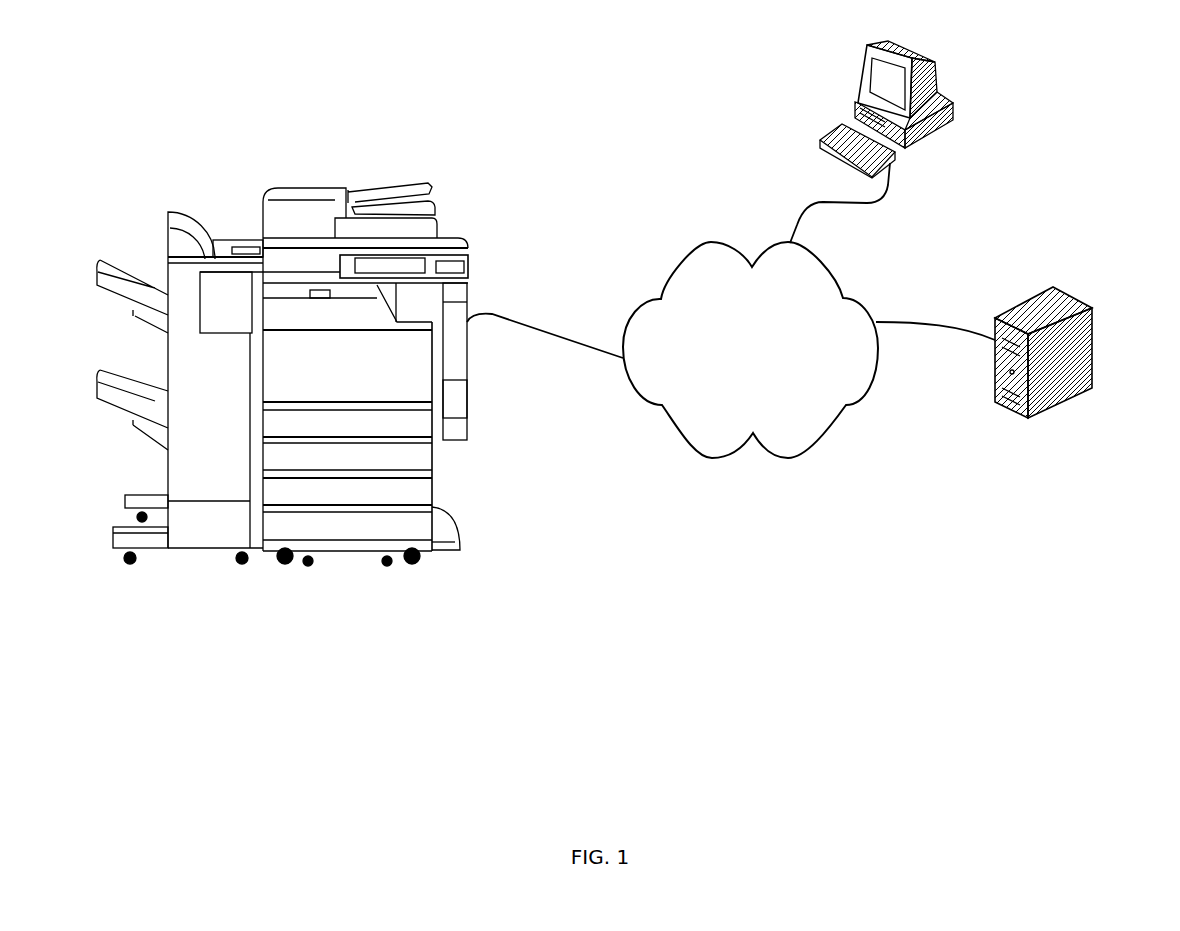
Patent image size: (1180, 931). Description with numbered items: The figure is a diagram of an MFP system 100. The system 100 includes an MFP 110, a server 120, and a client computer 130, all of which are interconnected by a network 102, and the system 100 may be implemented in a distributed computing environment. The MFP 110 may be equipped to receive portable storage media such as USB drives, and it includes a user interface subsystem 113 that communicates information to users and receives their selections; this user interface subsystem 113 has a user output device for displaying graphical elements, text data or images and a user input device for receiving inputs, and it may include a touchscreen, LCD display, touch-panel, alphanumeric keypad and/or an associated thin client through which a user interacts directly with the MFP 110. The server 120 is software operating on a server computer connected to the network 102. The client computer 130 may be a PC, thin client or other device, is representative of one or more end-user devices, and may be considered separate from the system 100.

The MFP system 100 is at (648, 119).
The MFP 110 is at (373, 188).
The user interface subsystem 113 is at (413, 265).
The network 102 is at (750, 350).
The server 120 is at (1092, 308).
The client computer 130 is at (953, 110).